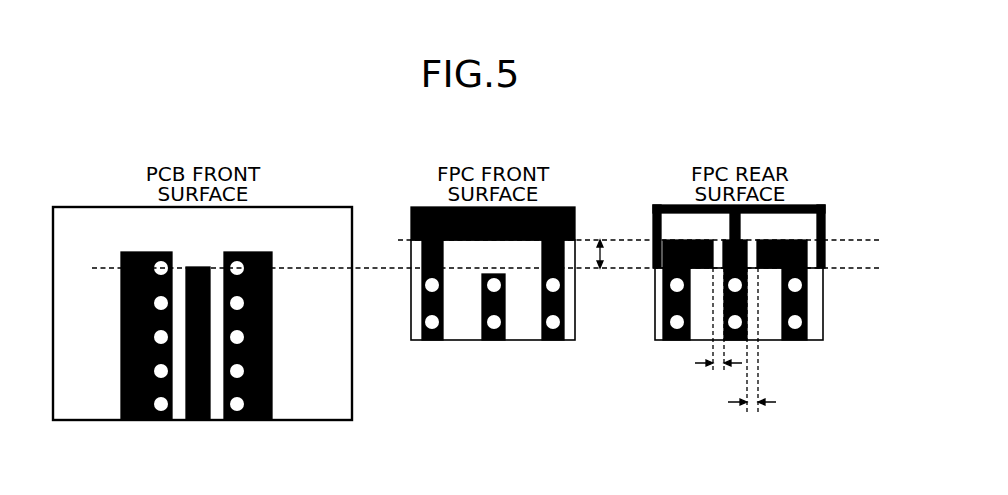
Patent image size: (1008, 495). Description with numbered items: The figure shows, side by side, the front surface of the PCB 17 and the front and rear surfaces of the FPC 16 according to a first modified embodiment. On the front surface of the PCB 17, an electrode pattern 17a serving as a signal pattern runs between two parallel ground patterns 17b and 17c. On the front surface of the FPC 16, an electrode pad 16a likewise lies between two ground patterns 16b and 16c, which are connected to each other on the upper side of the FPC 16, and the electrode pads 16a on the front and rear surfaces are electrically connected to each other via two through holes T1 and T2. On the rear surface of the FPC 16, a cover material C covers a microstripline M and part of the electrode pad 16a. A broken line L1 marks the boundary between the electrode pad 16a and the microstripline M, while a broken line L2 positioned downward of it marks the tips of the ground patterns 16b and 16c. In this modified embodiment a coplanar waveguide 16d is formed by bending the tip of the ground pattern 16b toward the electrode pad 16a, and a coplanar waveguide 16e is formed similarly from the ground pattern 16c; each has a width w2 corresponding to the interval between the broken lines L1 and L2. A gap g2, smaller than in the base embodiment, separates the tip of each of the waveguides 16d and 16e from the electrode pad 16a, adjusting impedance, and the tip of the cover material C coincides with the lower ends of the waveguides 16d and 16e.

The PCB 17 is at (292, 207).
The electrode pattern 17a is at (198, 421).
The ground pattern 17b is at (147, 421).
The ground pattern 17c is at (248, 421).
The FPC 16 is at (576, 312).
The electrode pad 16a is at (494, 341).
The ground pattern 16b is at (432, 341).
The ground pattern 16c is at (555, 341).
The coplanar waveguide (CPW) 16d is at (730, 224).
The coplanar waveguide (CPW) 16e is at (796, 248).
The through hole T1 is at (490, 321).
The through hole T2 is at (735, 286).
The microstripline M is at (680, 247).
The cover material C is at (797, 206).
The broken line L1 is at (837, 240).
The broken line L2 is at (843, 269).
The width w2 is at (603, 247).
The gap g2 is at (735, 350).